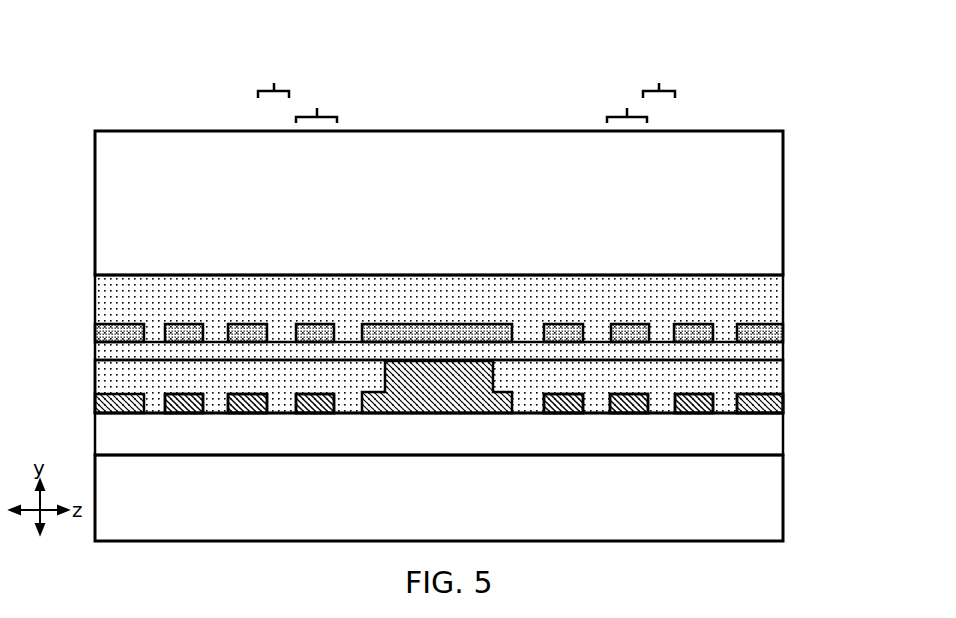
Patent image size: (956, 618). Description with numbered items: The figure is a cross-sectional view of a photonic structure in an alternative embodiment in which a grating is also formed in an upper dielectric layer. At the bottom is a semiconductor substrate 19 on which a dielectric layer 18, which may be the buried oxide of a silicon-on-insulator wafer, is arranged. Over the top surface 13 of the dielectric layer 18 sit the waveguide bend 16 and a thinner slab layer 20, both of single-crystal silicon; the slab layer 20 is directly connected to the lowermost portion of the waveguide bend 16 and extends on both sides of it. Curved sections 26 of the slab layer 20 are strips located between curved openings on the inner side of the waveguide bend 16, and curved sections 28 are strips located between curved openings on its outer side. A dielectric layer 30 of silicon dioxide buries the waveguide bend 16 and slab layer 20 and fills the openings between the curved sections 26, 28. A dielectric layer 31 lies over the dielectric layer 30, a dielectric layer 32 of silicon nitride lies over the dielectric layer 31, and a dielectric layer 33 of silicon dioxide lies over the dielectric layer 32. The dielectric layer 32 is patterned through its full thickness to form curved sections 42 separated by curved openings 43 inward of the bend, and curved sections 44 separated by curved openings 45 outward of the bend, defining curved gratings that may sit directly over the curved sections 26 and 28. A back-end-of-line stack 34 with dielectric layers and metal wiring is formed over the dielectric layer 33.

The top surface 13 is at (775, 410).
The waveguide bend 16 is at (435, 378).
The dielectric layer 18 is at (760, 442).
The semiconductor substrate 19 is at (763, 513).
The slab layer 20 is at (115, 408).
The curved section 26 is at (313, 398).
The curved section 28 is at (697, 404).
The dielectric layer 30 is at (115, 385).
The dielectric layer 31 is at (758, 356).
The dielectric layer 32 is at (105, 333).
The dielectric layer 33 is at (755, 300).
The back-end-of-line stack 34 is at (755, 202).
The curved section 42 is at (316, 103).
The curved opening 43 is at (273, 73).
The curved section 44 is at (627, 102).
The curved opening 45 is at (659, 73).